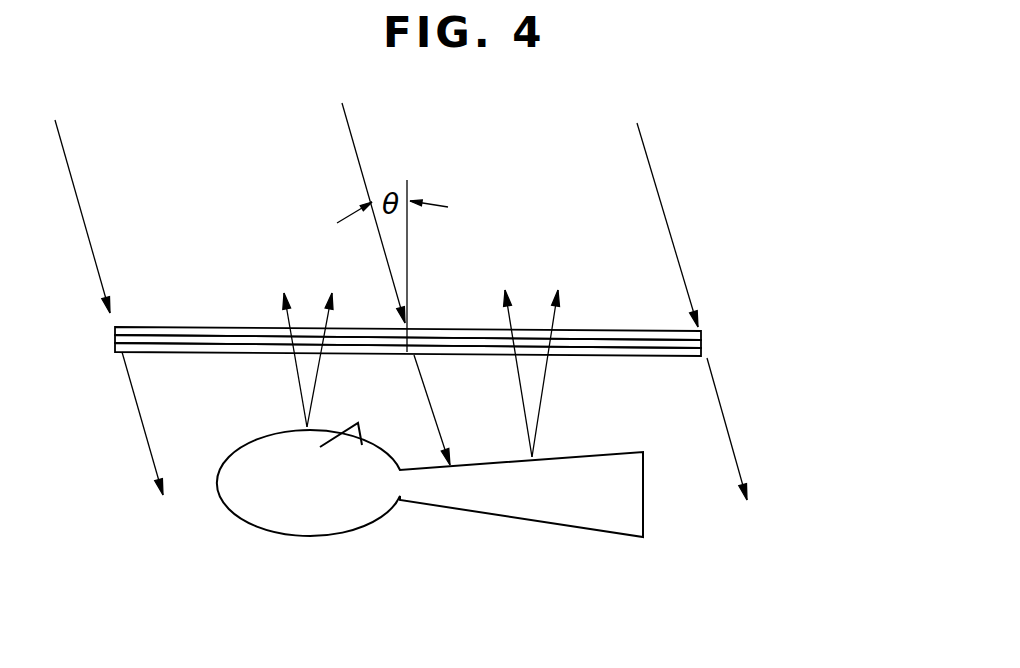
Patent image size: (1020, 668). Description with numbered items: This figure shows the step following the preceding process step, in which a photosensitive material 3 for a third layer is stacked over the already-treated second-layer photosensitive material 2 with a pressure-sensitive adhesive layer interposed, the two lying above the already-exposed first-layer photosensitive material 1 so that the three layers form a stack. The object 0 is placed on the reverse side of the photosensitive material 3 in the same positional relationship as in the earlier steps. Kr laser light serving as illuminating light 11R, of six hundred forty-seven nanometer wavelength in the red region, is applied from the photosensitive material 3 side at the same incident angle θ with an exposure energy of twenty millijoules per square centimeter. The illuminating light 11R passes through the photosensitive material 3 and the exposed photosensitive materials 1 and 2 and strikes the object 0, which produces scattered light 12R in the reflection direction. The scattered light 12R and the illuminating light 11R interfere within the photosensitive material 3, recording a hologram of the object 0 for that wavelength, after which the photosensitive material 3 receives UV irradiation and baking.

The illuminating light 11R is at (657, 188).
The scattered light 12R is at (577, 272).
The photosensitive material for a third layer 3 is at (703, 331).
The second-layer photosensitive material 2 is at (703, 343).
The photosensitive material 1 is at (703, 352).
The object 0 is at (643, 500).